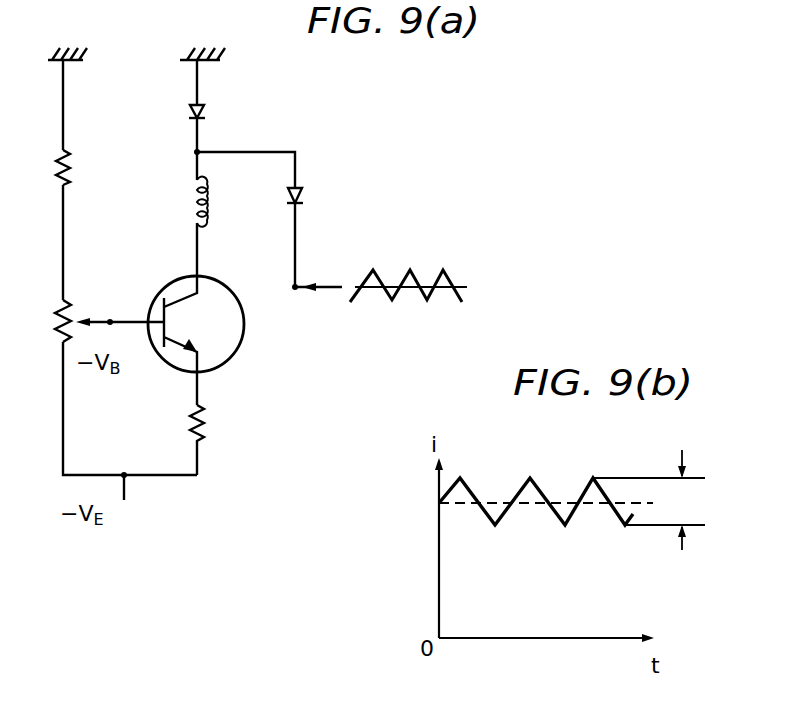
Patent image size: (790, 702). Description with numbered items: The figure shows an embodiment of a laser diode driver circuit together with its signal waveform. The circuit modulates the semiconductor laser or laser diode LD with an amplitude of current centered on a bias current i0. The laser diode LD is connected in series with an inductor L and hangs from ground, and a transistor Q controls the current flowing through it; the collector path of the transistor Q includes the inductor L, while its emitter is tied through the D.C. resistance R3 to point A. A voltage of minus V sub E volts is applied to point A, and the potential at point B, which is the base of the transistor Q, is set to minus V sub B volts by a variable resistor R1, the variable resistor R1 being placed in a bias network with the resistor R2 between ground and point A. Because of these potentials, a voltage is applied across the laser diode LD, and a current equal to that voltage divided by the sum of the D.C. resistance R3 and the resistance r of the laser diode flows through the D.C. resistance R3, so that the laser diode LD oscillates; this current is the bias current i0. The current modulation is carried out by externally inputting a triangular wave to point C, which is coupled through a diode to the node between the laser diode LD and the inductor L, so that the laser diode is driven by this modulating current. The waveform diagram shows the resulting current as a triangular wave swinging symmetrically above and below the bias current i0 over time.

In FIG. 9A, the variable resistor R1 is at (97, 321).
In FIG. 9A, the resistor R2 is at (47, 167).
In FIG. 9A, the D.C. resistance R3 is at (213, 440).
In FIG. 9A, the inductor L is at (210, 202).
In FIG. 9A, the transistor Q is at (243, 338).
In FIG. 9A, the laser diode LD is at (204, 112).
In FIG. 9A, the resistance of the laser diode r is at (172, 128).
In FIG. 9A, the point A is at (134, 499).
In FIG. 9A, the point B is at (109, 309).
In FIG. 9A, the point C is at (313, 302).
In FIG. 9B, the bias current i0 is at (535, 505).